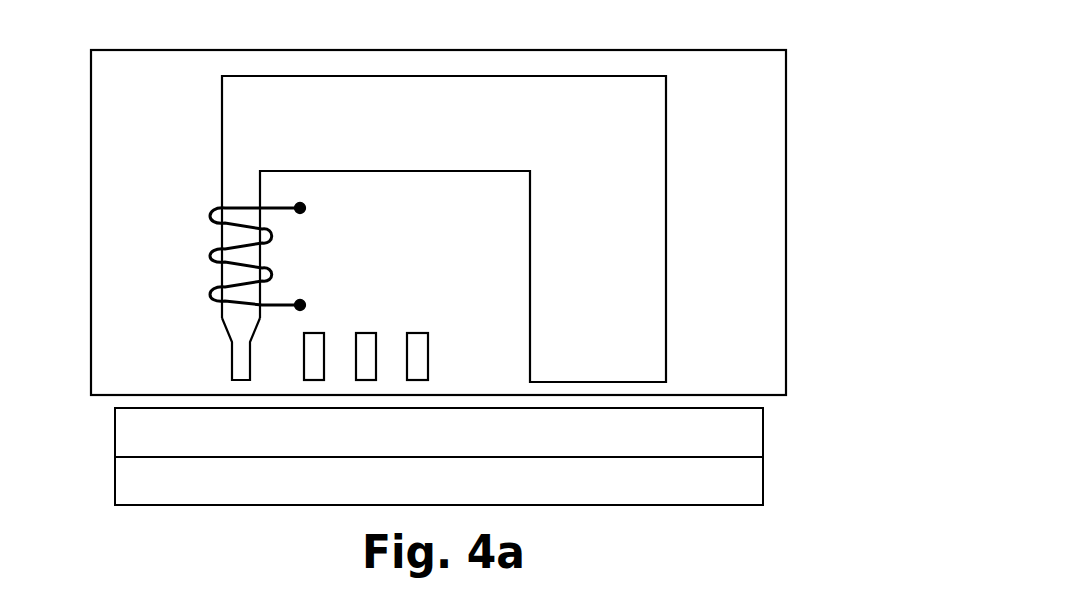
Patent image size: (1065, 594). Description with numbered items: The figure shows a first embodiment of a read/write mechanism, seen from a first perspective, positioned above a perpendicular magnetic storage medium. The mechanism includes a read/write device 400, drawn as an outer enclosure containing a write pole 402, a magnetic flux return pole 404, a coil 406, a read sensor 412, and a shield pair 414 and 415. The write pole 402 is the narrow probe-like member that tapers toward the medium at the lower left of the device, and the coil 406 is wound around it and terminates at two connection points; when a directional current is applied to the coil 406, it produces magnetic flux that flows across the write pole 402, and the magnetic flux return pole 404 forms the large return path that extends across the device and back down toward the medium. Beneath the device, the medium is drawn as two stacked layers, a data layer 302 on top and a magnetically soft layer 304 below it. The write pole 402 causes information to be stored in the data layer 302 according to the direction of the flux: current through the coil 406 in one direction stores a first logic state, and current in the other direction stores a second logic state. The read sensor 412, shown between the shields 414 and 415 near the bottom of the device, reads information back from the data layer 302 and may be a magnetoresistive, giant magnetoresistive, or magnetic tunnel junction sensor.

The read/write device 400 is at (91, 223).
The write pole 402 is at (230, 381).
The magnetic flux return pole 404 is at (613, 381).
The coil 406 is at (216, 255).
The read sensor 412 is at (367, 332).
The shield 414 is at (418, 332).
The shield 415 is at (315, 332).
The data layer 302 is at (115, 432).
The magnetically soft layer 304 is at (115, 479).